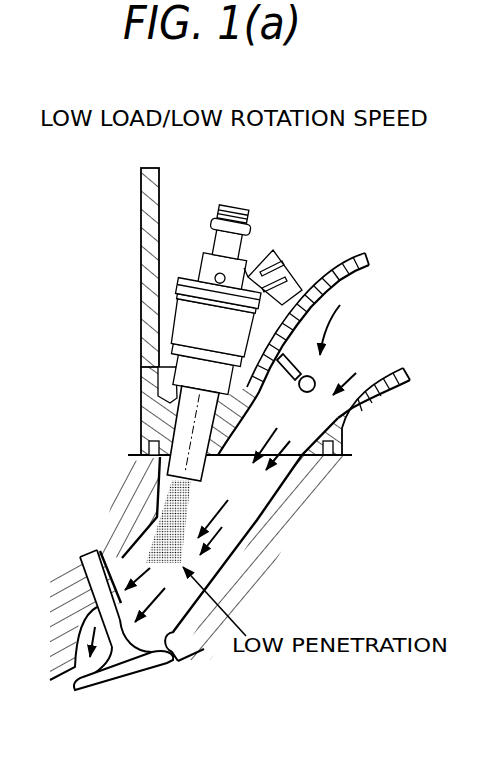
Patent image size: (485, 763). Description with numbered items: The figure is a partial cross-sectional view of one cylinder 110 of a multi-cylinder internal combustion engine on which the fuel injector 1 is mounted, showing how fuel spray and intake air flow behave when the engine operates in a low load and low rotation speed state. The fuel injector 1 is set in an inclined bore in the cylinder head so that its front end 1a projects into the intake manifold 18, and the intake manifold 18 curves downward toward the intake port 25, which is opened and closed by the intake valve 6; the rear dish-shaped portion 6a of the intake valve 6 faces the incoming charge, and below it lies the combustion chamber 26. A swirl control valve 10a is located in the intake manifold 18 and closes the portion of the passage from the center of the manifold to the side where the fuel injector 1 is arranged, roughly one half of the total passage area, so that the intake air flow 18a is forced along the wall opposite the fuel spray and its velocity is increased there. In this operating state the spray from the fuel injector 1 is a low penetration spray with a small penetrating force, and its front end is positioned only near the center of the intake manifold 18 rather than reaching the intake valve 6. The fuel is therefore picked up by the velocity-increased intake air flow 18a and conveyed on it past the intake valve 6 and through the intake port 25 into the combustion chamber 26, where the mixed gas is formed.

The cylinder 110 is at (141, 217).
The fuel injector 1 is at (175, 312).
The front end of the fuel injector 1a is at (190, 435).
The intake manifold 18 is at (330, 270).
The intake air flow 18a is at (224, 511).
The swirl control valve 10a is at (310, 392).
The intake valve 6 is at (131, 605).
The rear dish-shaped portion of the intake valve 6a is at (160, 662).
The intake port 25 is at (172, 640).
The combustion chamber 26 is at (128, 690).